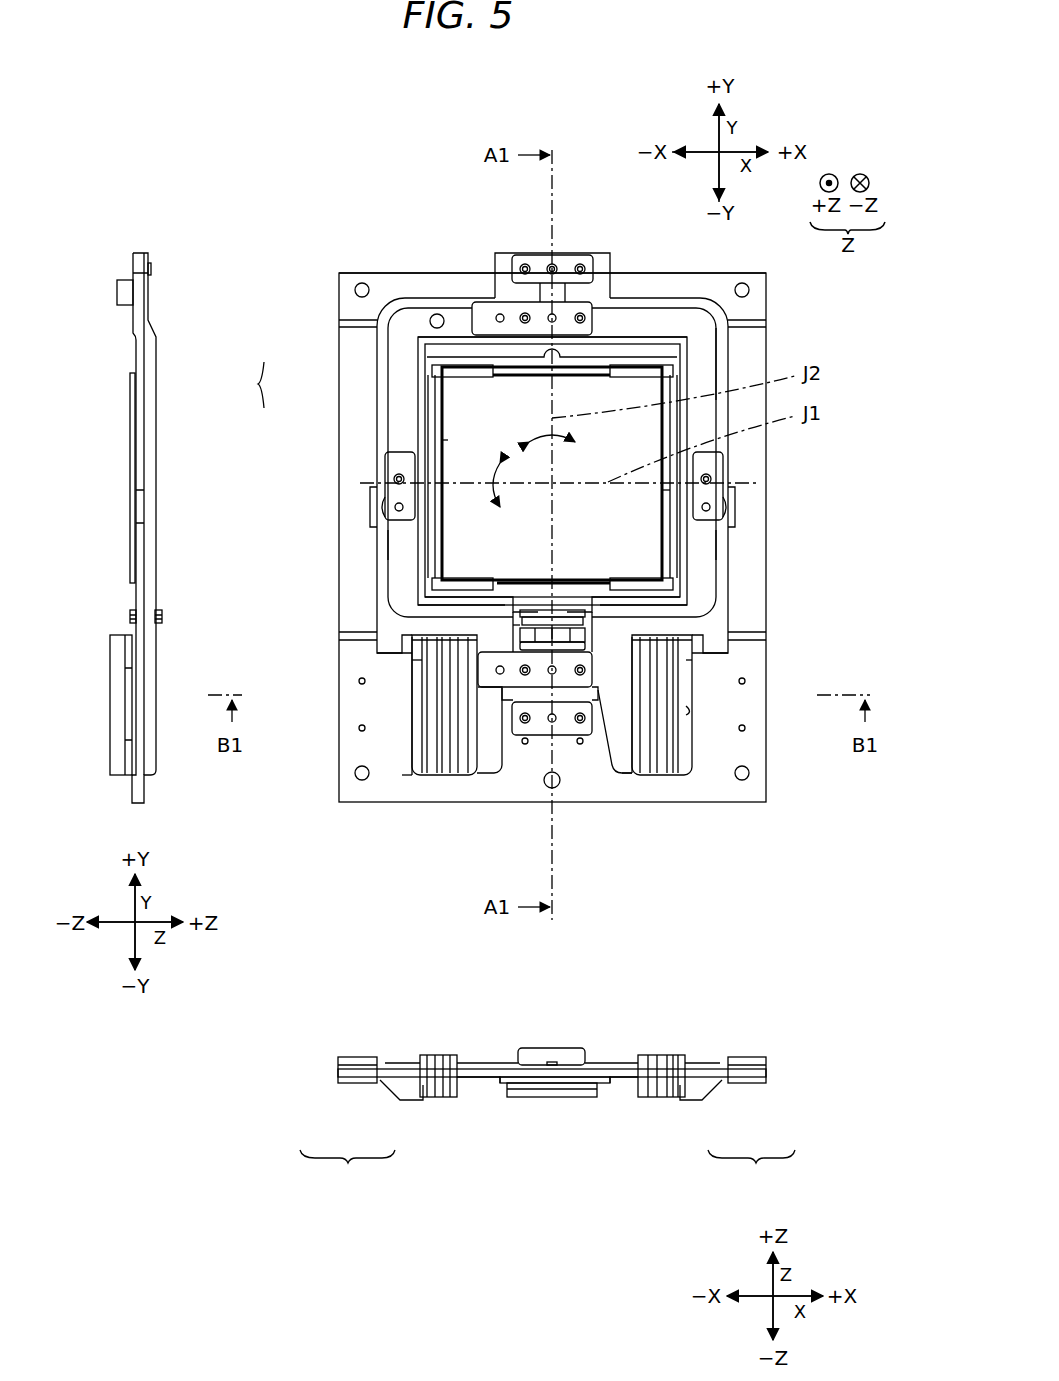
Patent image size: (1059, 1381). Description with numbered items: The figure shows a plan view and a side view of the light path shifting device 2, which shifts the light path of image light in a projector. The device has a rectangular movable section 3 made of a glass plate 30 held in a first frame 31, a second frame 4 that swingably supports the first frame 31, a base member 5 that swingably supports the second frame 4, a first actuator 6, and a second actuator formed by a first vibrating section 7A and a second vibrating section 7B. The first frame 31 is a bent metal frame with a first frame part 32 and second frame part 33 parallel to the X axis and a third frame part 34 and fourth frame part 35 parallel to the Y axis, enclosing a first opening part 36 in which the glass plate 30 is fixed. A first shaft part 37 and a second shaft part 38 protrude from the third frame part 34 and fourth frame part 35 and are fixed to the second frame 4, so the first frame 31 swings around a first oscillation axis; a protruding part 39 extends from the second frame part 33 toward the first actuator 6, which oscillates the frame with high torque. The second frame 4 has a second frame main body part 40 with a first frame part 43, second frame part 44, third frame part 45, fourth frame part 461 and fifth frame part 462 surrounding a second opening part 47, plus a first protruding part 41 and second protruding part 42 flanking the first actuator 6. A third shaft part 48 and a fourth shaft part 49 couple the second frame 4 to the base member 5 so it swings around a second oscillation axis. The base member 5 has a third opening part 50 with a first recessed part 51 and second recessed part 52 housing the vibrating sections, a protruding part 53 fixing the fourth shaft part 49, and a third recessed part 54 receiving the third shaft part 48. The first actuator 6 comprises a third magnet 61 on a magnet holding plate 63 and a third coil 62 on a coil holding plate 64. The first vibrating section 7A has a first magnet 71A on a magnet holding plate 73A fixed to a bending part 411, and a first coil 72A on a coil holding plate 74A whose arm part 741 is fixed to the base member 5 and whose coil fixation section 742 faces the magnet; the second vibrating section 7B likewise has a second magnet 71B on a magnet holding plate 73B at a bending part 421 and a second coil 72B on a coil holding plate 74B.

The light path shifting device 2 is at (135, 218).
The movable section 3 is at (159, 385).
The second frame 4 is at (398, 358).
The base member 5 is at (362, 298).
The first actuator 6 is at (483, 697).
The first vibrating section 7A is at (672, 787).
The second vibrating section 7B is at (428, 790).
The glass plate 30 is at (460, 402).
The first frame 31 is at (445, 437).
The first frame part 32 is at (520, 368).
The second frame part 33 is at (513, 595).
The third frame part 34 is at (670, 497).
The fourth frame part 35 is at (437, 520).
The first opening part 36 is at (448, 450).
The first shaft part 37 is at (723, 463).
The second shaft part 38 is at (413, 472).
The protruding part 39 is at (567, 598).
The second frame main body part 40 is at (435, 308).
The first protruding part 41 is at (628, 733).
The second protruding part 42 is at (380, 773).
The first frame part 43 is at (623, 322).
The second frame part 44 is at (703, 548).
The third frame part 45 is at (403, 538).
The second opening part 47 is at (650, 340).
The third shaft part 48 is at (530, 293).
The fourth shaft part 49 is at (540, 700).
The third opening part 50 is at (725, 343).
The first recessed part 51 is at (683, 713).
The second recessed part 52 is at (477, 743).
The protruding part 53 is at (607, 770).
The third recessed part 54 is at (558, 283).
The third magnet 61 is at (587, 617).
The third coil 62 is at (583, 625).
The magnet holding plate 63 is at (511, 626).
The coil holding plate 64 is at (587, 640).
The first magnet 71A is at (663, 775).
The second magnet 71B is at (440, 772).
The first coil 72A is at (675, 765).
The second coil 72B is at (430, 768).
The magnet holding plate 73A is at (663, 677).
The magnet holding plate 73B is at (453, 697).
The coil holding plate 74A is at (683, 685).
The coil holding plate 74B is at (420, 678).
The bending part 411 is at (633, 1083).
The bending part 421 is at (460, 1083).
The fourth frame part 461 is at (637, 615).
The fifth frame part 462 is at (460, 615).
The arm part 741 is at (350, 1085).
The coil fixation section 742 is at (398, 1098).